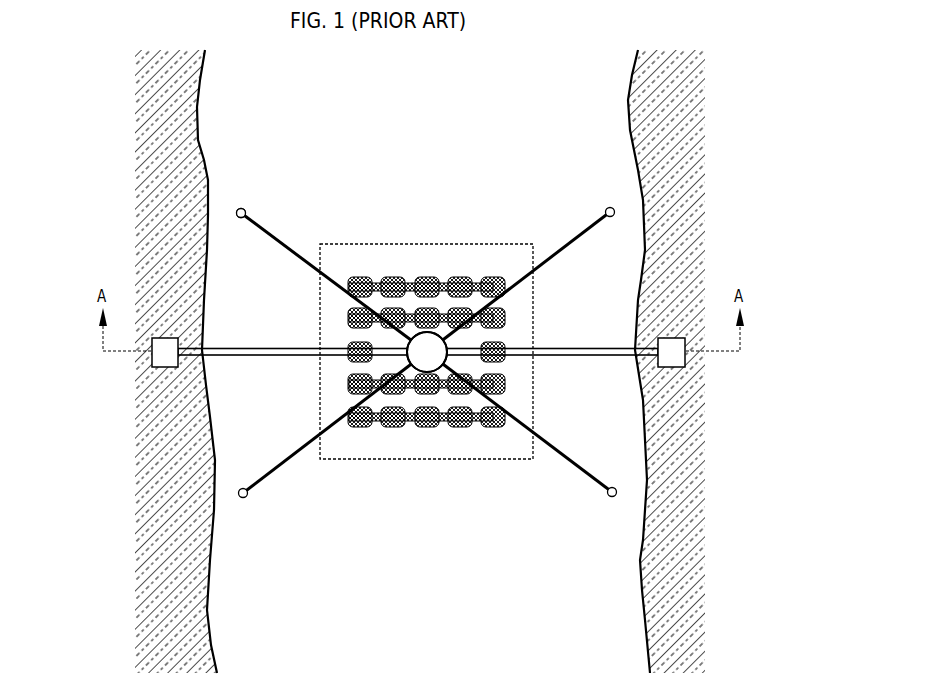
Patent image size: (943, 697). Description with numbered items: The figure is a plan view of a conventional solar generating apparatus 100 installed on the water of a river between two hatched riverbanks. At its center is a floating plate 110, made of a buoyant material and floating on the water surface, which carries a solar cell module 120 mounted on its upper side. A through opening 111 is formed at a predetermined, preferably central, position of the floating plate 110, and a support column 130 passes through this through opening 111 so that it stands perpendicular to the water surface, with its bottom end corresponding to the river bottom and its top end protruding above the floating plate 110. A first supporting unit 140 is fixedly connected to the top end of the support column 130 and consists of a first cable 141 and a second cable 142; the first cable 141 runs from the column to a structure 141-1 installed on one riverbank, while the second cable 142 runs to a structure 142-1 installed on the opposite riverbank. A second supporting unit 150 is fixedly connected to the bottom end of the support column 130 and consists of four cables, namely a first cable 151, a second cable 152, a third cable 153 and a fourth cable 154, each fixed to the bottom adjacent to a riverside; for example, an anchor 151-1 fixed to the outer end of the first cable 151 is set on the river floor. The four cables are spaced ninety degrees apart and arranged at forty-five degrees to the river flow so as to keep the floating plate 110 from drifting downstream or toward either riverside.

The solar generating apparatus 100 is at (380, 244).
The floating plate 110 is at (427, 460).
The through opening 111 is at (450, 343).
The solar cell module 120 is at (495, 276).
The support column 130 is at (432, 332).
The first supporting unit 140 is at (418, 348).
The first cable 141 is at (268, 357).
The structure 141-1 is at (150, 371).
The second cable 142 is at (588, 357).
The structure 142-1 is at (688, 371).
The second supporting unit 150 is at (427, 349).
The first cable 151 is at (290, 249).
The anchor 151-1 is at (244, 208).
The second cable 152 is at (583, 230).
The third cable 153 is at (585, 478).
The fourth cable 154 is at (268, 482).